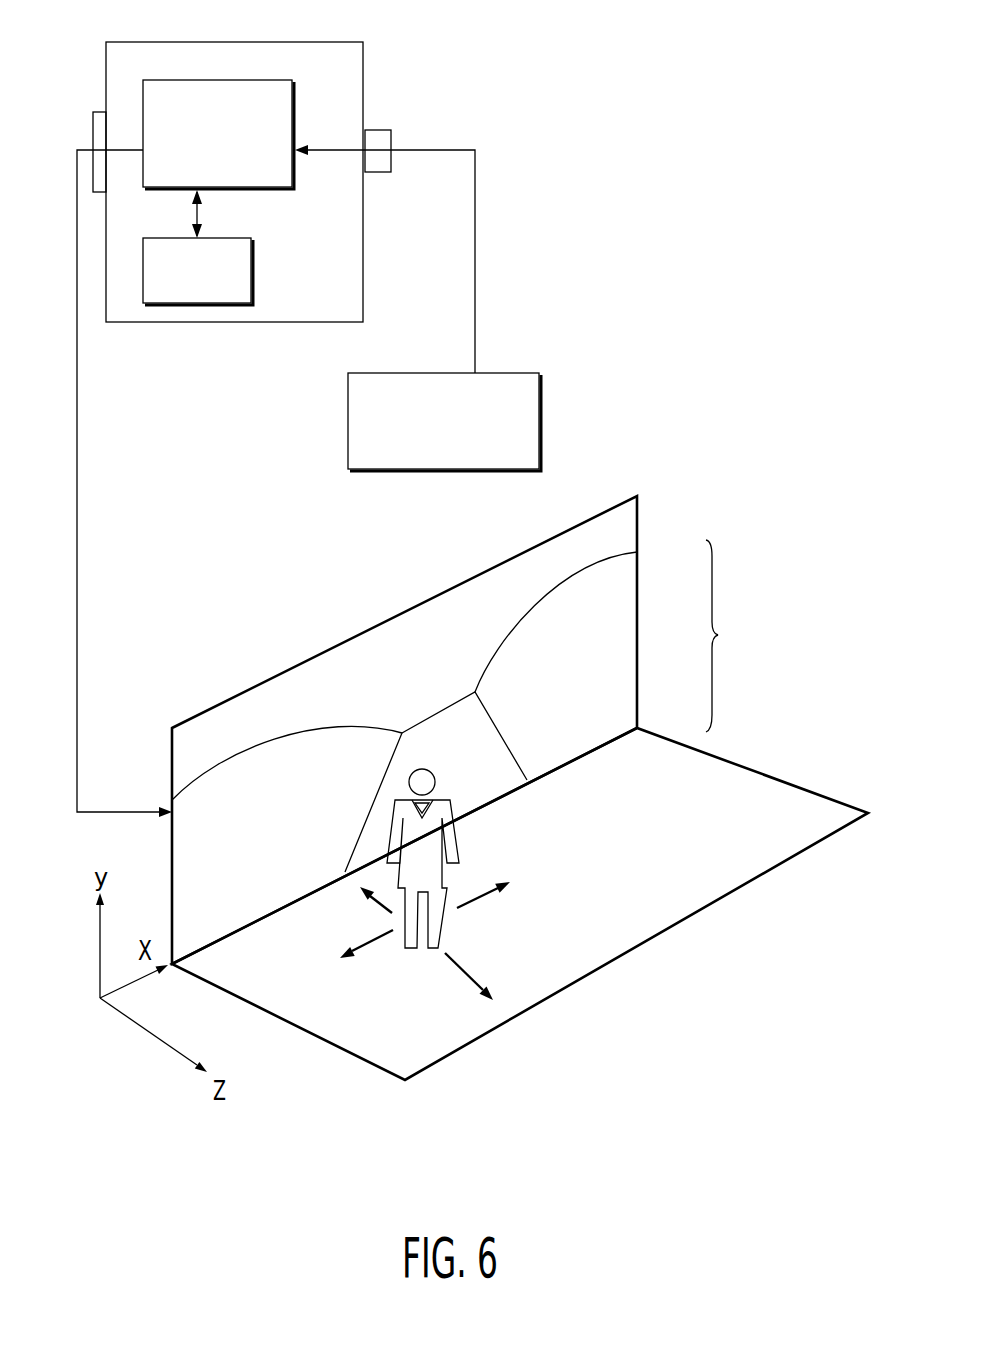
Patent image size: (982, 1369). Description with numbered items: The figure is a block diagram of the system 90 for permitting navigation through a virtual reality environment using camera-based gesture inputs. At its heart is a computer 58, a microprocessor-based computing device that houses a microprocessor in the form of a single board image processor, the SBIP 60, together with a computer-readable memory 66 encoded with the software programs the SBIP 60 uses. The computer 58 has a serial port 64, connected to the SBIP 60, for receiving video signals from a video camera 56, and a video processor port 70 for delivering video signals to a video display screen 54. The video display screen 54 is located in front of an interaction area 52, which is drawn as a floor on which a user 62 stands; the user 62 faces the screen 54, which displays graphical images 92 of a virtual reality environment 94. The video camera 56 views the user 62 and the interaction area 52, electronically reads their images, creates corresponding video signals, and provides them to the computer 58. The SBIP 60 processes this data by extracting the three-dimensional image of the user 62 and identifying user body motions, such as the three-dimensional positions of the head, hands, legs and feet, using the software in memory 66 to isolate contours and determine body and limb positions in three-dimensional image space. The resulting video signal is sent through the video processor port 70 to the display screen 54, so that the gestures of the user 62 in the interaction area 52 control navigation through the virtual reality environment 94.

The system for permitting navigation through a virtual reality environment 90 is at (664, 114).
The computer 58 is at (365, 63).
The microprocessor (SBIP) 60 is at (203, 80).
The computer-readable memory 66 is at (197, 305).
The video processor port 70 is at (102, 117).
The serial port 64 is at (375, 137).
The video camera 56 is at (541, 396).
The video display screen 54 is at (600, 537).
The graphical images 92 is at (632, 574).
The virtual reality environment 94 is at (726, 636).
The interaction area 52 is at (667, 858).
The user 62 is at (400, 937).